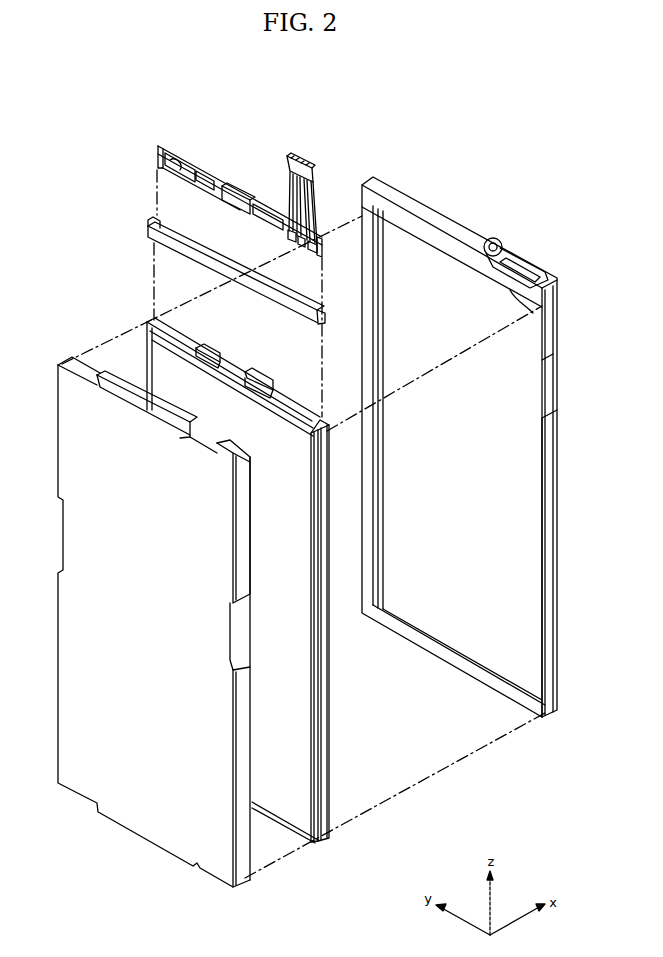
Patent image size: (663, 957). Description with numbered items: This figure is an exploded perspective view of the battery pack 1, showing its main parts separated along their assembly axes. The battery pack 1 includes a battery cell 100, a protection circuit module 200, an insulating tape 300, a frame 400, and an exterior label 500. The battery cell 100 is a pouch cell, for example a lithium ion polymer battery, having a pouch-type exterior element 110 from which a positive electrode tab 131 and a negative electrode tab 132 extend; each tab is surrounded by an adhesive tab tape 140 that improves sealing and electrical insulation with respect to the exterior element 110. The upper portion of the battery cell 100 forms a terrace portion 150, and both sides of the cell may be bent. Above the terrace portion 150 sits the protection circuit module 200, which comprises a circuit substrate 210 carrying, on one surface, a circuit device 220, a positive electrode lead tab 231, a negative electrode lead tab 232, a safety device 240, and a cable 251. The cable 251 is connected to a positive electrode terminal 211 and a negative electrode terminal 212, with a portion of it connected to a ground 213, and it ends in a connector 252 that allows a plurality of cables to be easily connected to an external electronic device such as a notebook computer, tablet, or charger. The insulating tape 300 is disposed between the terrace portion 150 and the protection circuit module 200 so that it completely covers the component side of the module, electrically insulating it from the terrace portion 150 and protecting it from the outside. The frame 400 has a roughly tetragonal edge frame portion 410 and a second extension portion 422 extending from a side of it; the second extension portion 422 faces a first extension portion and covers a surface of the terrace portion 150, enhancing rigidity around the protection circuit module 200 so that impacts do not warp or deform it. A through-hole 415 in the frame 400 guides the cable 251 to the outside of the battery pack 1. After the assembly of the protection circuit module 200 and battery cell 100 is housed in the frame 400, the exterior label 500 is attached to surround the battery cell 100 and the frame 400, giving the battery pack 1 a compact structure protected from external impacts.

The battery pack 1 is at (506, 149).
The battery cell 100 is at (204, 604).
The exterior element 110 is at (302, 812).
The positive electrode tab 131 is at (271, 384).
The negative electrode tab 132 is at (209, 345).
The adhesive tab tape 140 is at (245, 372).
The terrace portion 150 is at (163, 325).
The protection circuit module 200 is at (211, 188).
The circuit substrate 210 is at (158, 149).
The positive electrode terminal 211 is at (288, 235).
The negative electrode terminal 212 is at (311, 254).
The ground 213 is at (303, 243).
The circuit device 220 is at (227, 192).
The positive electrode lead tab 231 is at (258, 200).
The negative electrode lead tab 232 is at (200, 170).
The safety device 240 is at (168, 150).
The cable 251 is at (312, 197).
The connector 252 is at (292, 153).
The insulating tape 300 is at (144, 231).
The frame 400 is at (502, 447).
The edge frame portion 410 is at (553, 413).
The through-hole 415 is at (537, 263).
The second extension portion 422 is at (533, 313).
The exterior label 500 is at (62, 438).